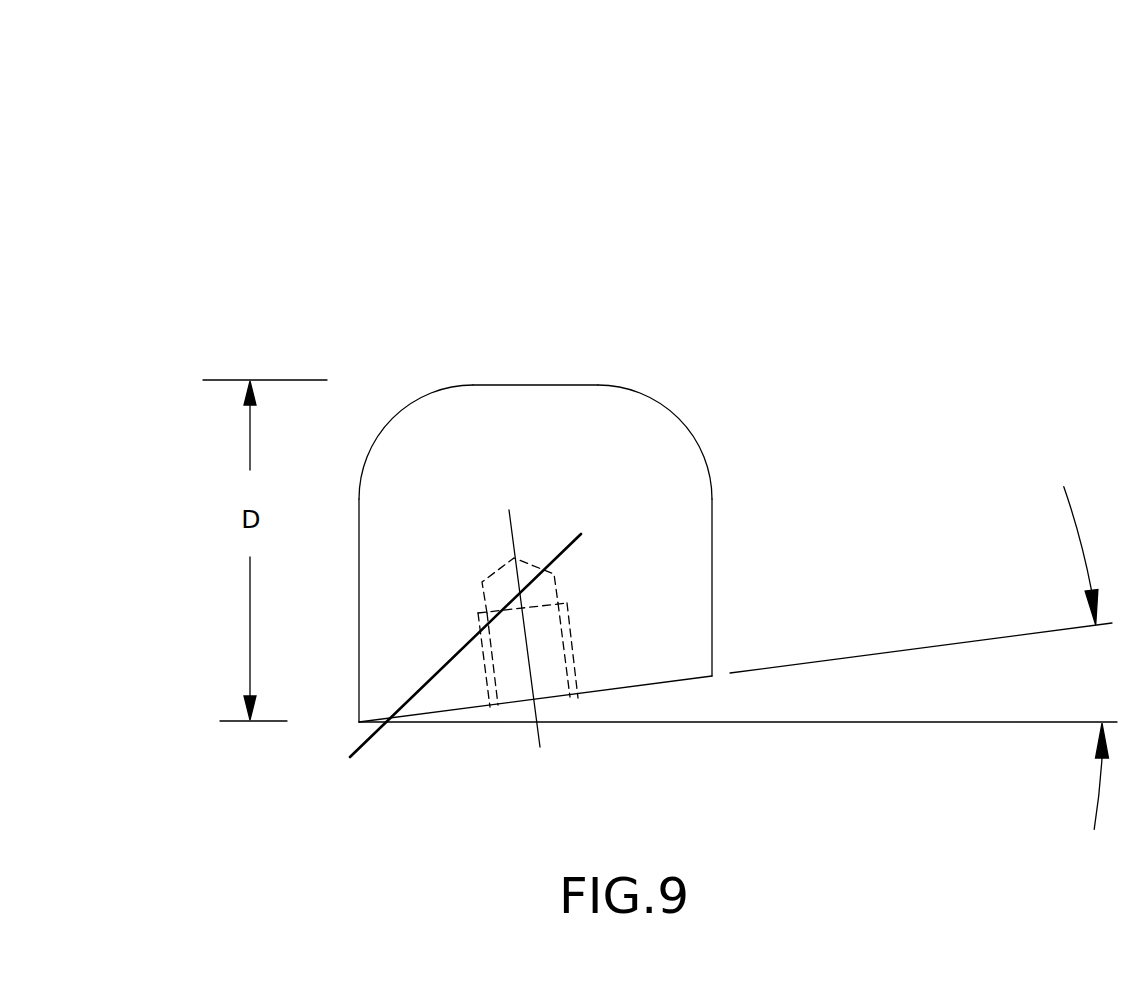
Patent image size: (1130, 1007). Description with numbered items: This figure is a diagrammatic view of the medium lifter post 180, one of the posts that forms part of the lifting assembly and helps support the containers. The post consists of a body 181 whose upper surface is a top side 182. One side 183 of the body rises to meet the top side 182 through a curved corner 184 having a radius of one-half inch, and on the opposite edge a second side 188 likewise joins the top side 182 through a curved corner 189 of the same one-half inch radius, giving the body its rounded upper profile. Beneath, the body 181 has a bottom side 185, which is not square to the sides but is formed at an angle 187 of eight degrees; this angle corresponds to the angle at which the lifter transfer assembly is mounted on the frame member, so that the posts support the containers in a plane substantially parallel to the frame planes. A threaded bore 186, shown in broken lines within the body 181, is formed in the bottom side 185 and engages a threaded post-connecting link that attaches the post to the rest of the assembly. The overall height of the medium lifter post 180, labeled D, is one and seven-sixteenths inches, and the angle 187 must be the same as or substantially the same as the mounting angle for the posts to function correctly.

The medium lifter post 180 is at (523, 440).
The body 181 is at (449, 665).
The top side 182 is at (545, 384).
The side 183 is at (358, 607).
The curved corner 184 is at (397, 420).
The bottom side 185 is at (674, 685).
The threaded bore 186 is at (534, 700).
The angle 187 is at (742, 658).
The side 188 is at (713, 638).
The curved corner 189 is at (677, 417).